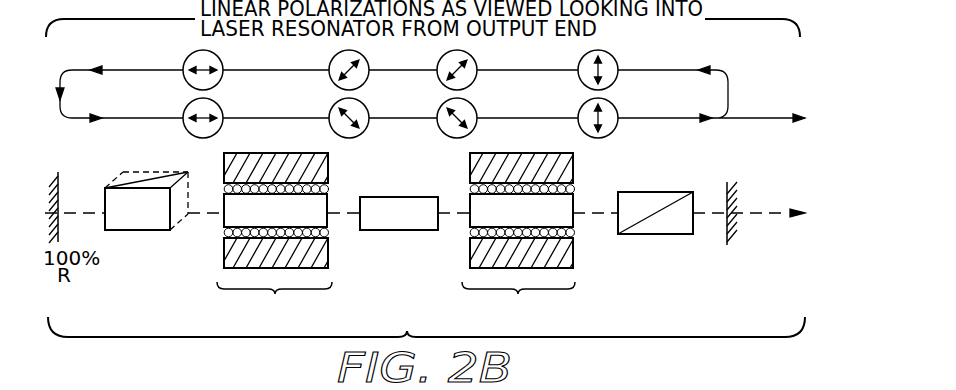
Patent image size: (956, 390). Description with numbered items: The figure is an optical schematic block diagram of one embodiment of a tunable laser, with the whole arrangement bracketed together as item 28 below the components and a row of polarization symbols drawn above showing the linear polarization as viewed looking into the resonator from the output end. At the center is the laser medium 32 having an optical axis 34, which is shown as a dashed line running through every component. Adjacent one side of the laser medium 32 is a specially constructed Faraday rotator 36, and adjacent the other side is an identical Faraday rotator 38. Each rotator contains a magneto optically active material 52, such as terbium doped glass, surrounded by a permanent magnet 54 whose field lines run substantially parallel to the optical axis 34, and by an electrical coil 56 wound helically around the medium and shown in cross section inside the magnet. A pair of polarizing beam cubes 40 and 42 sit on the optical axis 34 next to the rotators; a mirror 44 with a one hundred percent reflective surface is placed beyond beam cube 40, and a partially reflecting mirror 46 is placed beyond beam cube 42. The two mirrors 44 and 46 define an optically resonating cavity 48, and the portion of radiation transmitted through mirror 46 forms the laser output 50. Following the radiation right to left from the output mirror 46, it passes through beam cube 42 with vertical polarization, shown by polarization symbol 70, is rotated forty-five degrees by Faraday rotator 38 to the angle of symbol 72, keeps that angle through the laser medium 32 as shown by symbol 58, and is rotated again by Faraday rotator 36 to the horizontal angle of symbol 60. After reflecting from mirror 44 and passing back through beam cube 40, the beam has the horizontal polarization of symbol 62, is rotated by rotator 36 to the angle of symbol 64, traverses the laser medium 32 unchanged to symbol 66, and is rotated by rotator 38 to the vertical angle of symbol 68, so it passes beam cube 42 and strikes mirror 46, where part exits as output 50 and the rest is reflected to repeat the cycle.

The laser resonator 28 is at (426, 353).
The laser medium 32 is at (392, 230).
The optical axis 34 is at (345, 213).
The Faraday rotator 36 is at (274, 239).
The Faraday rotator 38 is at (497, 233).
The polarizing beam cube 40 is at (150, 230).
The polarizing beam cube 42 is at (672, 192).
The mirror 44 is at (60, 186).
The mirror 46 is at (724, 232).
The optically resonating cavity 48 is at (189, 293).
The laser output 50 is at (793, 185).
The magneto optically active material 52 is at (468, 222).
The permanent magnet 54 is at (468, 168).
The electrical coil 56 is at (468, 190).
The polarization symbol 58 is at (368, 62).
The polarization symbol 60 is at (222, 62).
The polarization symbol 62 is at (222, 110).
The polarization symbol 64 is at (368, 110).
The polarization symbol 66 is at (476, 110).
The polarization symbol 68 is at (617, 110).
The polarization symbol 70 is at (617, 62).
The polarization symbol 72 is at (476, 62).